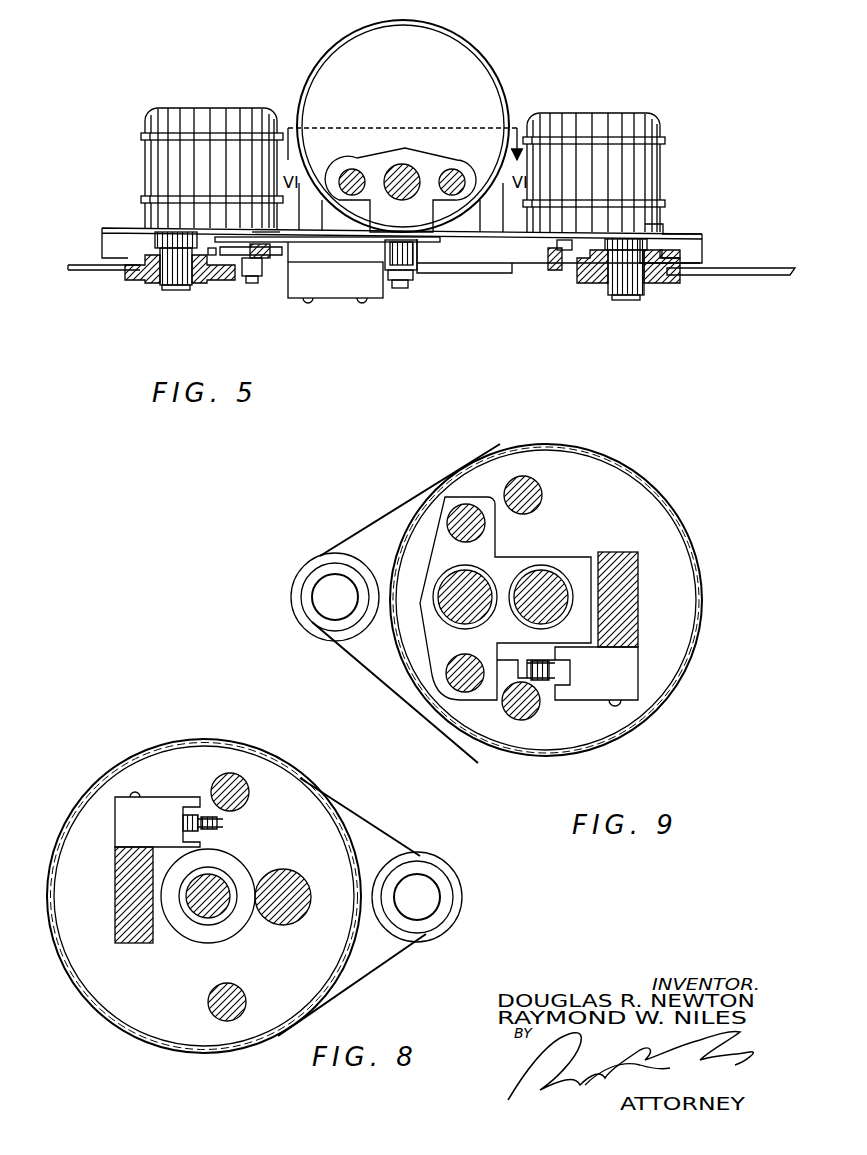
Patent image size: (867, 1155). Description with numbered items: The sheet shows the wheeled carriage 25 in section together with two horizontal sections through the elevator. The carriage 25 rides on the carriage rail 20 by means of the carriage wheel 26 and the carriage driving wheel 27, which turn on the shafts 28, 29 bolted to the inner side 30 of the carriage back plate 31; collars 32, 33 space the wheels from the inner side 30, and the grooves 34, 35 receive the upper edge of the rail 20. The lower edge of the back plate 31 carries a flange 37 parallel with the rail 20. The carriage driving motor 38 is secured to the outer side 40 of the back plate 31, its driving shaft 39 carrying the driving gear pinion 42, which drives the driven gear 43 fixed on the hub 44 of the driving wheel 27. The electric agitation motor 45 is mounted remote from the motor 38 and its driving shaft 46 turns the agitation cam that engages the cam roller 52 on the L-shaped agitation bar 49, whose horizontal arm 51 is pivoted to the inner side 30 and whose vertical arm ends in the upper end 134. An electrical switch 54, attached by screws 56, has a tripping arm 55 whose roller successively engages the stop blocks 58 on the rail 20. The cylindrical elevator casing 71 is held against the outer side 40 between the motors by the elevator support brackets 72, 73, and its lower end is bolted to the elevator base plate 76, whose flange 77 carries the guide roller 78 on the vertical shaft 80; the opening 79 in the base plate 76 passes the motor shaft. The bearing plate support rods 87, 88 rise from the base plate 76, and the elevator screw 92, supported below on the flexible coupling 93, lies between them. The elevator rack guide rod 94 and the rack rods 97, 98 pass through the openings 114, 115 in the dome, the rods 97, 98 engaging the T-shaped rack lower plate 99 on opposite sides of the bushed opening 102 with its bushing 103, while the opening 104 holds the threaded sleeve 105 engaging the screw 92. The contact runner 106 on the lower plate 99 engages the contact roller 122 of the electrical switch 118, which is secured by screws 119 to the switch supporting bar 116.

In FIG. 5, the carriage rail 20 is at (736, 276).
In FIG. 5, the wheeled carriage 25 is at (130, 213).
In FIG. 5, the carriage wheel 26 is at (150, 280).
In FIG. 5, the carriage driving wheel 27 is at (657, 284).
In FIG. 5, the shaft 28 is at (173, 292).
In FIG. 5, the shaft 29 is at (622, 300).
In FIG. 5, the inner side of carriage back plate 30 is at (472, 240).
In FIG. 5, the carriage back plate 31 is at (108, 228).
In FIG. 5, the collar 32 is at (170, 238).
In FIG. 5, the collar 33 is at (650, 224).
In FIG. 5, the groove 34 is at (128, 268).
In FIG. 5, the groove 35 is at (680, 283).
In FIG. 5, the flange 37 is at (692, 250).
In FIG. 5, the carriage driving motor 38 is at (585, 116).
In FIG. 5, the driving shaft 39 is at (557, 245).
In FIG. 5, the outer side of back plate 40 is at (705, 237).
In FIG. 5, the driving gear pinion 42 is at (555, 271).
In FIG. 5, the driven gear 43 is at (592, 243).
In FIG. 5, the hub 44 is at (692, 233).
In FIG. 5, the electric agitation motor 45 is at (210, 112).
In FIG. 5, the driving shaft 46 is at (252, 230).
In FIG. 5, the agitation bar 49 is at (298, 237).
In FIG. 5, the horizontal arm 51 is at (314, 243).
In FIG. 5, the cam roller 52 is at (249, 283).
In FIG. 5, the electrical switch 54 is at (366, 298).
In FIG. 5, the tripping arm 55 is at (398, 288).
In FIG. 5, the screws 56 is at (362, 302).
In FIG. 5, the stop blocks 58 is at (420, 268).
In FIG. 8, the elevator casing 71 is at (162, 748).
In FIG. 9, the elevator casing 71 is at (660, 494).
In FIG. 5, the elevator support bracket 72 is at (492, 204).
In FIG. 5, the elevator support bracket 73 is at (305, 203).
In FIG. 5, the elevator base plate 76 is at (486, 45).
In FIG. 9, the elevator base plate 76 is at (660, 539).
In FIG. 8, the flange 77 is at (373, 828).
In FIG. 9, the flange 77 is at (372, 521).
In FIG. 8, the guide roller 78 is at (421, 853).
In FIG. 9, the guide roller 78 is at (300, 560).
In FIG. 8, the opening 79 is at (190, 930).
In FIG. 8, the vertical shaft 80 is at (432, 895).
In FIG. 9, the vertical shaft 80 is at (328, 602).
In FIG. 8, the bearing plate support rod 87 is at (214, 1004).
In FIG. 9, the bearing plate support rod 87 is at (525, 722).
In FIG. 8, the bearing plate support rod 88 is at (242, 797).
In FIG. 9, the bearing plate support rod 88 is at (522, 488).
In FIG. 8, the elevator screw 92 is at (220, 905).
In FIG. 9, the elevator screw 92 is at (556, 590).
In FIG. 8, the flexible coupling 93 is at (232, 884).
In FIG. 5, the elevator rack guide rod 94 is at (400, 170).
In FIG. 8, the elevator rack guide rod 94 is at (298, 922).
In FIG. 9, the elevator rack guide rod 94 is at (455, 582).
In FIG. 5, the rack rod 97 is at (459, 170).
In FIG. 9, the rack rod 97 is at (458, 681).
In FIG. 5, the rack rod 98 is at (346, 172).
In FIG. 9, the rack rod 98 is at (465, 516).
In FIG. 9, the rack lower plate 99 is at (445, 650).
In FIG. 9, the opening 102 is at (438, 590).
In FIG. 9, the bushing 103 is at (495, 558).
In FIG. 9, the opening 104 is at (549, 562).
In FIG. 9, the threaded sleeve 105 is at (560, 572).
In FIG. 9, the contact runner 106 is at (500, 706).
In FIG. 5, the opening 114 is at (446, 162).
In FIG. 5, the opening 115 is at (352, 165).
In FIG. 8, the switch supporting bar 116 is at (125, 921).
In FIG. 9, the switch supporting bar 116 is at (625, 582).
In FIG. 8, the electrical switch 118 is at (130, 800).
In FIG. 9, the electrical switch 118 is at (625, 672).
In FIG. 9, the screws 119 is at (618, 706).
In FIG. 8, the contact roller 122 is at (217, 823).
In FIG. 9, the contact roller 122 is at (535, 681).
In FIG. 5, the upper end of vertical arm 134 is at (212, 256).